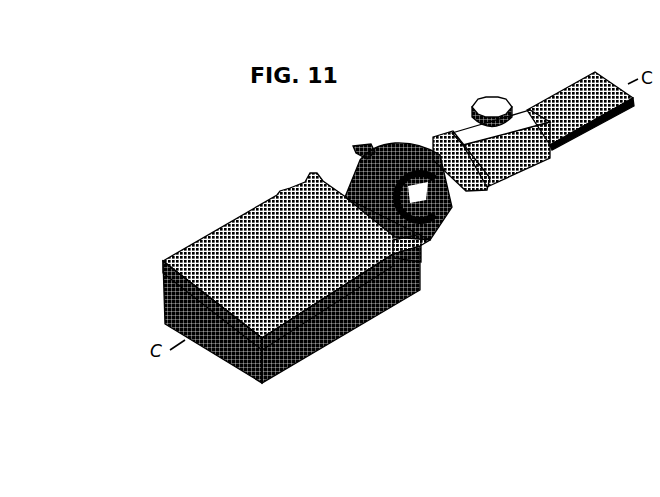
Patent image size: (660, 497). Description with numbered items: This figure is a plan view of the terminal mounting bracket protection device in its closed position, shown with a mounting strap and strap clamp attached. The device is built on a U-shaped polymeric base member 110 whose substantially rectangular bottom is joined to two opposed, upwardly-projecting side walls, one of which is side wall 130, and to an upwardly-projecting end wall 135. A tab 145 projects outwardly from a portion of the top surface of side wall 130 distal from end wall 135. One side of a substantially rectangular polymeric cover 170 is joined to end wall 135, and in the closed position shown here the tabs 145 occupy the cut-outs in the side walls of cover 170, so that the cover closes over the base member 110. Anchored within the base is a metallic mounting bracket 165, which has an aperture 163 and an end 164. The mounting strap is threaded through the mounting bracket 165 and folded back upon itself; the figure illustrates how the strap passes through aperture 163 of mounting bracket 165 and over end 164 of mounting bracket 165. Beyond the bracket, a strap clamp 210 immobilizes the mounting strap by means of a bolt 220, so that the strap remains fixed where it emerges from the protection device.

The U-shaped polymeric base member 110 is at (494, 188).
The side wall 130 is at (337, 336).
The end wall 135 is at (211, 348).
The tab 145 is at (420, 271).
The aperture 163 is at (432, 234).
The end 164 is at (354, 150).
The metallic mounting bracket 165 is at (440, 212).
The cover 170 is at (232, 258).
The strap clamp 210 is at (537, 163).
The bolt 220 is at (481, 104).